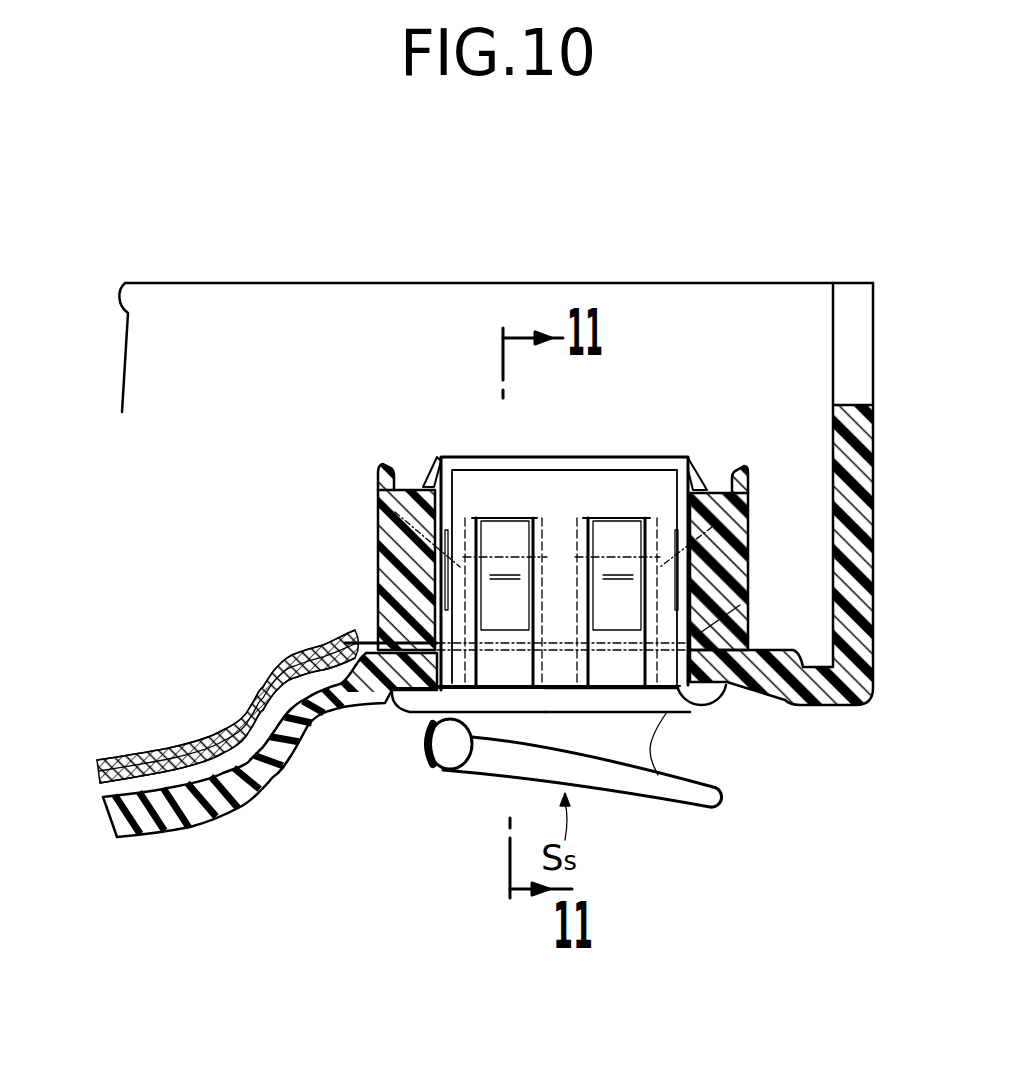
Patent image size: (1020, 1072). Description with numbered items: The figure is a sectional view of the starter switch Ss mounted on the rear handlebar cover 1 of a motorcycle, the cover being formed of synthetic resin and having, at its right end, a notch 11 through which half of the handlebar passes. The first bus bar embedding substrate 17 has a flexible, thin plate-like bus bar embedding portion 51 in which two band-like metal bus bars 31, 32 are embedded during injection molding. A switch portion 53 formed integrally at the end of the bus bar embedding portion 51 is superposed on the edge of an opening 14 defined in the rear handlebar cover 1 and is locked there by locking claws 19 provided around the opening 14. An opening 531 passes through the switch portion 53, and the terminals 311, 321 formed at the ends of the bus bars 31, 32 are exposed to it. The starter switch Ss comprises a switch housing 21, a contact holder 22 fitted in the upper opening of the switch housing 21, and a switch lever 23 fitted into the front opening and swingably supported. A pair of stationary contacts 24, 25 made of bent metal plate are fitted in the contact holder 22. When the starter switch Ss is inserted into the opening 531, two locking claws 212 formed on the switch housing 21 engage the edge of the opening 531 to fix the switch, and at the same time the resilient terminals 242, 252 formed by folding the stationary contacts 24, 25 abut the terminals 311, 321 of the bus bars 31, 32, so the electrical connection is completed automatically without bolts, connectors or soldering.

The rear handlebar cover 1 is at (190, 838).
The notch 11 is at (852, 408).
The opening 14 is at (695, 713).
The first bus bar embedding substrate 17 is at (110, 752).
The locking claw 19 is at (378, 478).
The switch housing 21 is at (674, 448).
The locking claw 212 is at (741, 465).
The contact holder 22 is at (568, 458).
The switch lever 23 is at (625, 798).
The stationary contact 24 is at (483, 700).
The terminal 242 is at (497, 525).
The stationary contact 25 is at (616, 698).
The terminal 252 is at (618, 522).
The bus bar 31 is at (262, 656).
The bus bar 32 is at (227, 720).
The terminal 311 is at (395, 510).
The terminal 321 is at (750, 488).
The bus bar embedding portion 51 is at (183, 728).
The switch portion 53 is at (378, 592).
The opening 531 is at (700, 633).